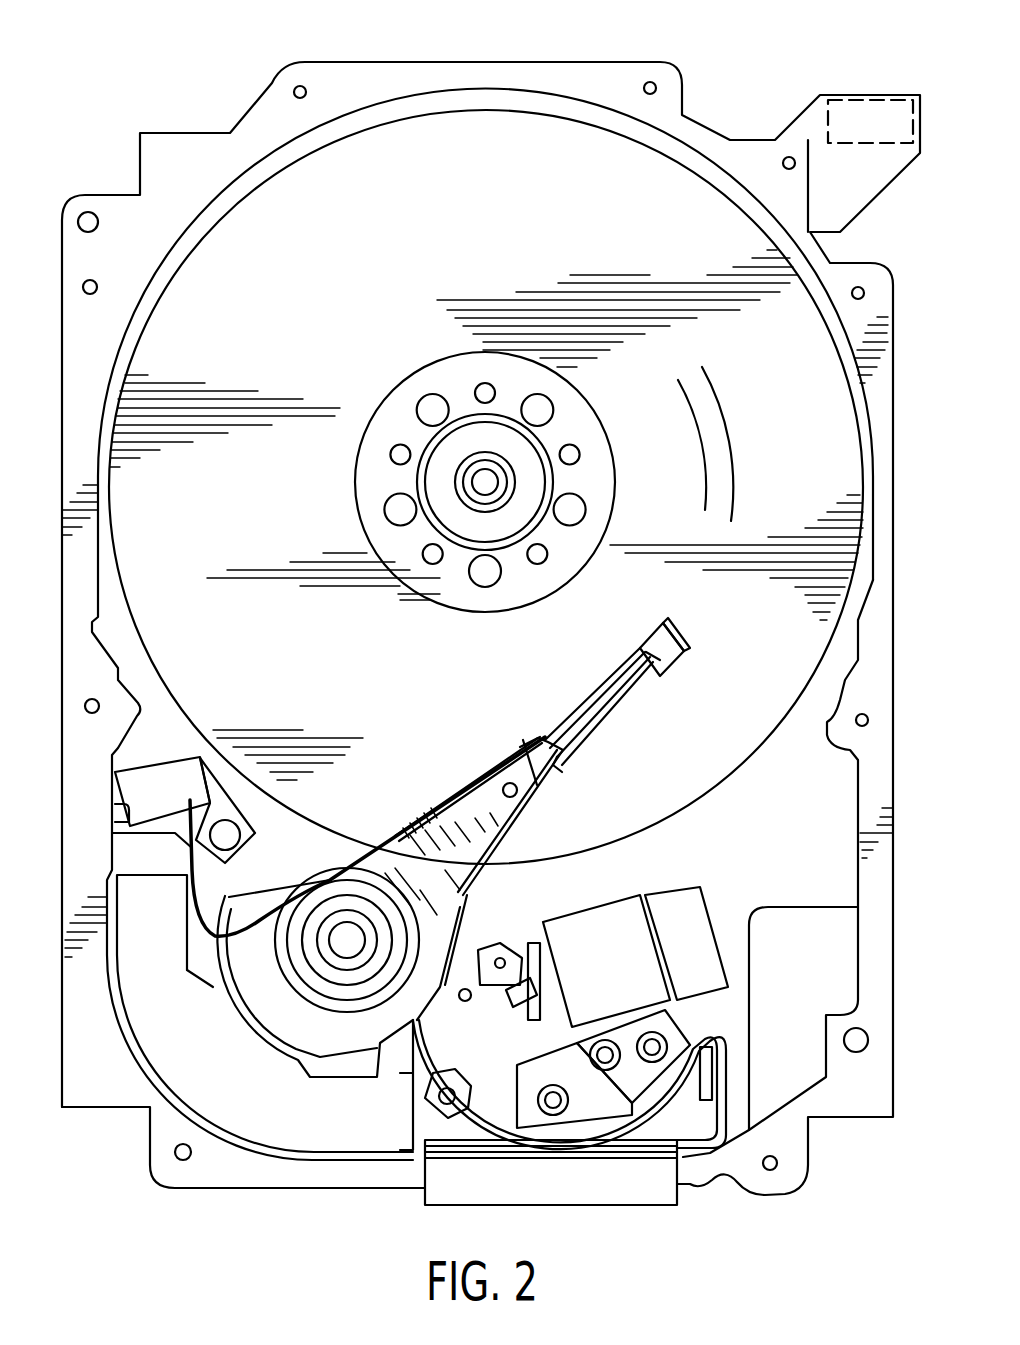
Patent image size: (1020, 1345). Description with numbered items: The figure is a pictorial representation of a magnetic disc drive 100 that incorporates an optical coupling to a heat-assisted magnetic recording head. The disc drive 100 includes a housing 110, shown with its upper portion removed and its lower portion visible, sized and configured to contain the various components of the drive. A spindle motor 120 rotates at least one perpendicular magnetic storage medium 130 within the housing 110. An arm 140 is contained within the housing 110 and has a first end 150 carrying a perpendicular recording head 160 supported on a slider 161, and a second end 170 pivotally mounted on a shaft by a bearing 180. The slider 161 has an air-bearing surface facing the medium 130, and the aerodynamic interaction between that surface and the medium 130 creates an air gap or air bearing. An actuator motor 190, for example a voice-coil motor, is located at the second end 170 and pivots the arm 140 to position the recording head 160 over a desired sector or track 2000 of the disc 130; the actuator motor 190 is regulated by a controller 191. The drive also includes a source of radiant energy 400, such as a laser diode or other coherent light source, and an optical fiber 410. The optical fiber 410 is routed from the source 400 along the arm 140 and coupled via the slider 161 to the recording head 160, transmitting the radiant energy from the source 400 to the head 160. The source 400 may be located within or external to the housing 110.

The magnetic disc drive 100 is at (118, 125).
The housing 110 is at (628, 70).
The spindle motor 120 is at (475, 482).
The perpendicular magnetic storage medium 130 is at (390, 268).
The arm 140 is at (478, 800).
The first end 150 is at (598, 690).
The perpendicular recording head 160 is at (682, 632).
The slider 161 is at (660, 655).
The second end 170 is at (370, 870).
The bearing 180 is at (335, 935).
The actuator motor 190 is at (238, 1071).
The controller 191 is at (835, 988).
The source of radiant energy 400 is at (181, 812).
The optical fiber 410 is at (428, 815).
The track 2000 is at (710, 446).